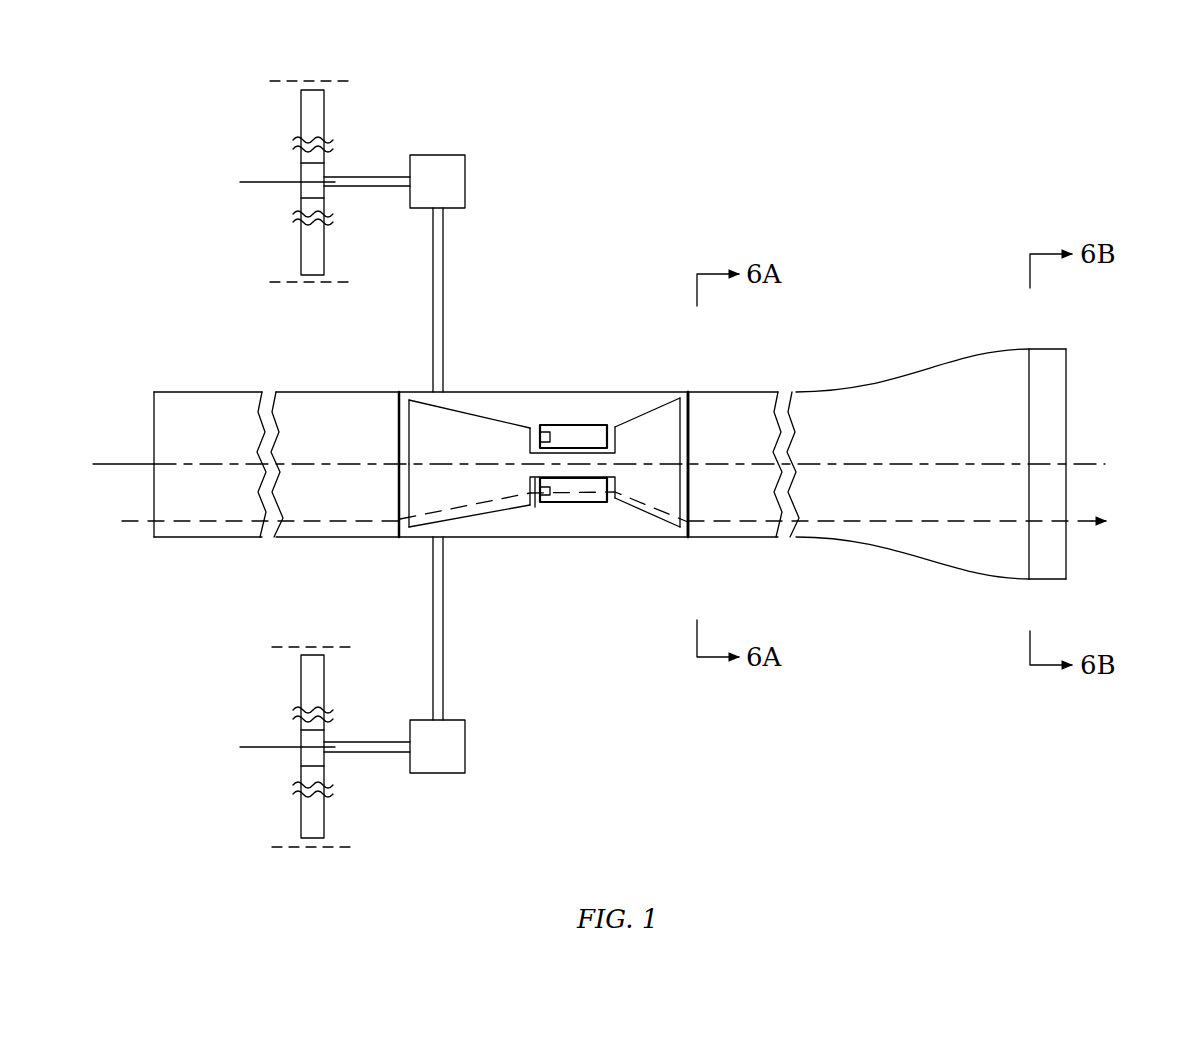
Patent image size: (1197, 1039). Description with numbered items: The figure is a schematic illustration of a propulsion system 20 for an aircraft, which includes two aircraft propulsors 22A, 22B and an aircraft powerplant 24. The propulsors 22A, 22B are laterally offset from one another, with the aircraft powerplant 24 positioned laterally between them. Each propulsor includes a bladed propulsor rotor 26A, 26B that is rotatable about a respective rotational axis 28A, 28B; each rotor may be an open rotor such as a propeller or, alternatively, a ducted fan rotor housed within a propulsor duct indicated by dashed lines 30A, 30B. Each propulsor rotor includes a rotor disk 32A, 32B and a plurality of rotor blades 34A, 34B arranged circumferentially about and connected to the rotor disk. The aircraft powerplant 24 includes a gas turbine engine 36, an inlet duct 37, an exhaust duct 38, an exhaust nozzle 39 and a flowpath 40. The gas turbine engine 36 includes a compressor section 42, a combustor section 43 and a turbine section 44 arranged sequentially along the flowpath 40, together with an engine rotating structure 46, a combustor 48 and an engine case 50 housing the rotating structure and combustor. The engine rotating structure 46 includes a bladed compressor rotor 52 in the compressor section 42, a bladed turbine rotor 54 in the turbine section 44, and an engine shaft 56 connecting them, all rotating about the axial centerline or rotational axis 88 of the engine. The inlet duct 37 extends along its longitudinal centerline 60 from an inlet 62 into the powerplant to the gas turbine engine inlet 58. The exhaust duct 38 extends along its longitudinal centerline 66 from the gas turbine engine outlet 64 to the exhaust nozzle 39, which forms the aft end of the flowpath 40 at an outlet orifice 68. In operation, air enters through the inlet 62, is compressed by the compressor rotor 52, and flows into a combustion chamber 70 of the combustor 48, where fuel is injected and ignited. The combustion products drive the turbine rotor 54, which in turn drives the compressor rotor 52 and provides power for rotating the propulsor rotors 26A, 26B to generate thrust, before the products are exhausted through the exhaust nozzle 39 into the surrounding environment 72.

The propulsion system 20 is at (976, 137).
The aircraft propulsor 22A is at (261, 67).
The aircraft propulsor 22B is at (261, 858).
The aircraft powerplant 24 is at (152, 336).
The bladed propulsor rotor 26A is at (297, 262).
The bladed propulsor rotor 26B is at (297, 667).
The rotational axis 28A is at (243, 182).
The rotational axis 28B is at (243, 747).
The propulsor duct 30A is at (347, 80).
The propulsor duct 30B is at (347, 850).
The rotor disk 32A is at (325, 192).
The rotor disk 32B is at (325, 757).
The rotor blades 34A is at (325, 108).
The rotor blades 34B is at (325, 673).
The gas turbine engine 36 is at (580, 387).
The inlet duct 37 is at (228, 386).
The exhaust duct 38 is at (830, 389).
The exhaust nozzle 39 is at (1050, 347).
The flowpath 40 is at (313, 443).
The compressor section 42 is at (478, 406).
The combustor section 43 is at (553, 419).
The turbine section 44 is at (648, 401).
The engine rotating structure 46 is at (630, 521).
The combustor 48 is at (563, 508).
The engine case 50 is at (667, 538).
The bladed compressor rotor 52 is at (403, 497).
The bladed turbine rotor 54 is at (690, 495).
The engine shaft 56 is at (537, 500).
The gas turbine engine inlet 58 is at (398, 417).
The longitudinal centerline of the inlet duct 60 is at (97, 466).
The inlet 62 is at (154, 423).
The gas turbine engine outlet 64 is at (691, 416).
The longitudinal centerline of the exhaust duct 66 is at (956, 460).
The outlet orifice 68 is at (1067, 392).
The combustion chamber 70 is at (590, 435).
The environment 72 is at (1152, 430).
The axial centerline / rotational axis of the gas turbine engine 88 is at (465, 525).